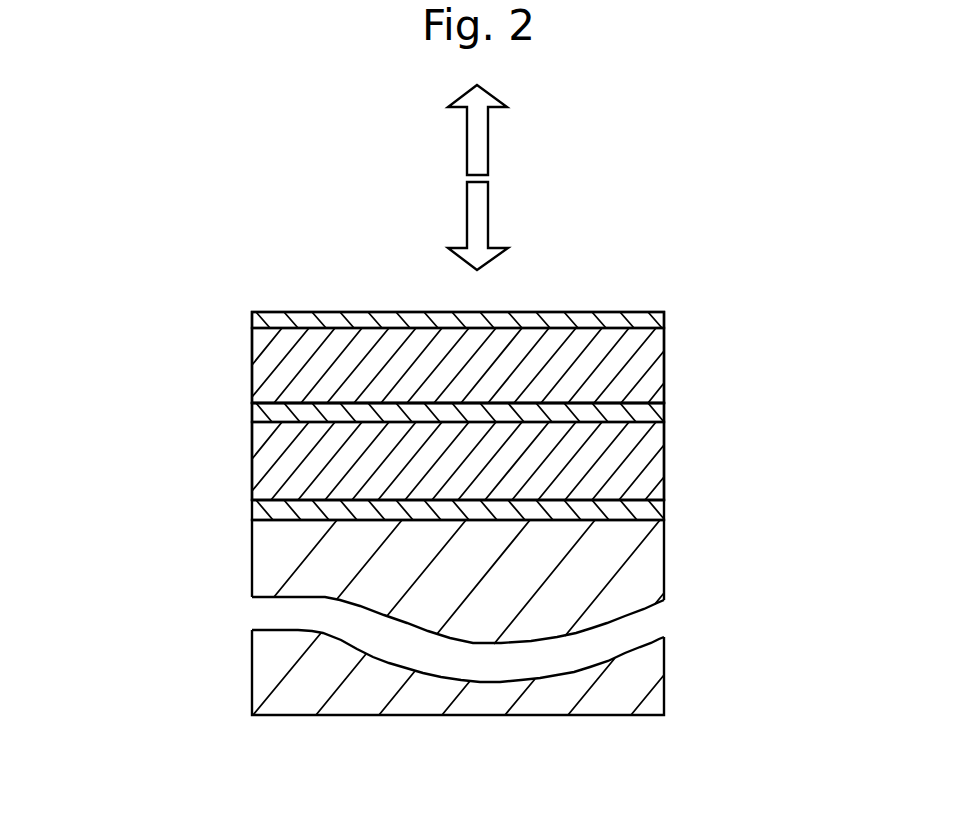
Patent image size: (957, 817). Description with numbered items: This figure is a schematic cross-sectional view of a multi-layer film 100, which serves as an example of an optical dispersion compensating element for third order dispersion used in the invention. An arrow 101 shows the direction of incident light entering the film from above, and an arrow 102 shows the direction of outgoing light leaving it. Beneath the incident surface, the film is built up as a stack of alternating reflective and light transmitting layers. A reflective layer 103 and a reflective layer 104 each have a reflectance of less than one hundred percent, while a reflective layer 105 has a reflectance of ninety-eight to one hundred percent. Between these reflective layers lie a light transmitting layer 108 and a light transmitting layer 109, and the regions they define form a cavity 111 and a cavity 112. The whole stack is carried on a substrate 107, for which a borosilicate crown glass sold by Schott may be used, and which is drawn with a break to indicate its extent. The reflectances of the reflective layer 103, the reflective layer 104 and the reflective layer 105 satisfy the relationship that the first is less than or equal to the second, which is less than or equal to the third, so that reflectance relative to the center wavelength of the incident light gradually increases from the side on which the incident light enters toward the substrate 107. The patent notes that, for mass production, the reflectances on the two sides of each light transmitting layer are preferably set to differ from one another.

The multi-layer film 100 is at (296, 166).
The arrow showing direction of incident light 101 is at (485, 212).
The arrow showing direction of outgoing light 102 is at (487, 142).
The reflective layer 103 is at (670, 313).
The reflective layer 104 is at (665, 410).
The reflective layer 105 is at (665, 513).
The substrate 107 is at (667, 557).
The light transmitting layer 108 is at (665, 372).
The light transmitting layer 109 is at (665, 465).
The cavity 111 is at (224, 371).
The cavity 112 is at (216, 441).